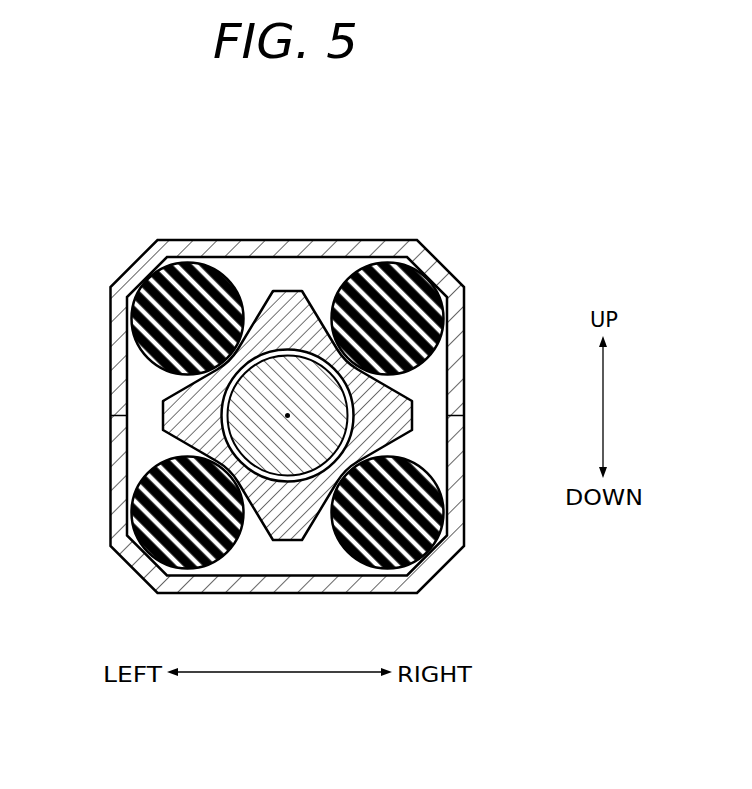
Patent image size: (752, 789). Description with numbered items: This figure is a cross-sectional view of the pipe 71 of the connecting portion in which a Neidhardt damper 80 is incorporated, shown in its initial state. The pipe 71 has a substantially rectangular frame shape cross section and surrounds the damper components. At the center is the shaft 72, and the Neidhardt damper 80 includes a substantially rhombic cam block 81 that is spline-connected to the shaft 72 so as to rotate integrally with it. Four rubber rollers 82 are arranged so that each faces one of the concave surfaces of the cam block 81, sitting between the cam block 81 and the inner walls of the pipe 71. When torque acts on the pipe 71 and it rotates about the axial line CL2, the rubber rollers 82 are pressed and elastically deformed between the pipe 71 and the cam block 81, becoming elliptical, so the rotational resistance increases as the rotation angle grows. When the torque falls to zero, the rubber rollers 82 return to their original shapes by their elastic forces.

The pipe 71 is at (463, 512).
The shaft 72 is at (300, 477).
The Neidhardt damper 80 is at (278, 424).
The cam block 81 is at (314, 313).
The rubber rollers 82 is at (134, 343).
The axial line CL2 is at (288, 416).